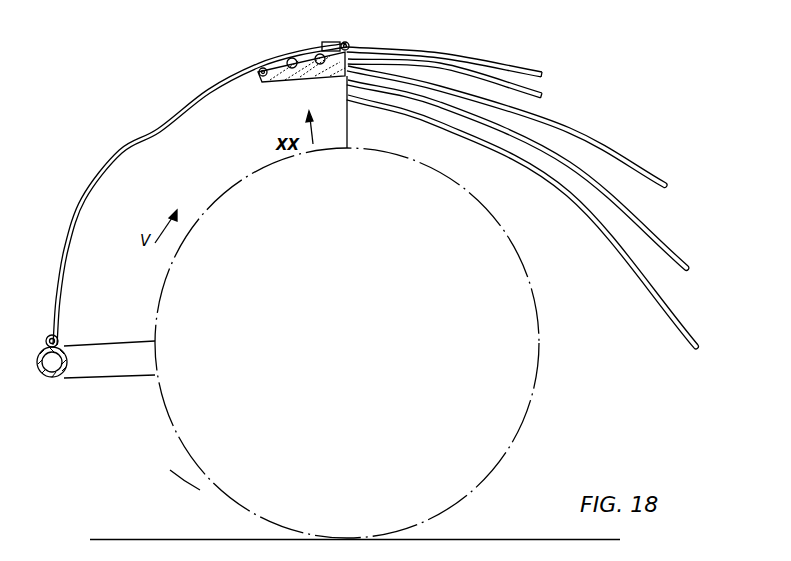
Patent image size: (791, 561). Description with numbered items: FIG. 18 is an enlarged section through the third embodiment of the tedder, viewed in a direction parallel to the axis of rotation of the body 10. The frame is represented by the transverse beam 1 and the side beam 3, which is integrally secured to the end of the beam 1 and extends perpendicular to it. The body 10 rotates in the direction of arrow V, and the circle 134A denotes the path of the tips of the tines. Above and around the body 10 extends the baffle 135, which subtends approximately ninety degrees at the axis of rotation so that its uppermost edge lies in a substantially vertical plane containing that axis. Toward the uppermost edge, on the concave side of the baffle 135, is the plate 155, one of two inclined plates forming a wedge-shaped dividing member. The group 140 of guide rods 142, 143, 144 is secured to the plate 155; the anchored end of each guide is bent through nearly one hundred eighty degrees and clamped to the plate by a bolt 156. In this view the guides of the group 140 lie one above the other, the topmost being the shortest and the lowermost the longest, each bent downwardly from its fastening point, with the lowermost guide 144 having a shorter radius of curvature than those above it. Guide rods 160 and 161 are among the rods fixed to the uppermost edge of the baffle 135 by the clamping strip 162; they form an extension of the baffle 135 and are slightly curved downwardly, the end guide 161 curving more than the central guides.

The beam 1 is at (52, 377).
The beam 3 is at (124, 370).
The body 10 is at (487, 482).
The circle 134A is at (194, 484).
The baffle 135 is at (123, 155).
The group of guide rods 140 is at (648, 268).
The guide rod 142 is at (675, 303).
The guide rod 143 is at (660, 230).
The guide rod 144 is at (615, 152).
The plate 155 is at (247, 80).
The bolt 156 is at (265, 78).
The guide rod 160 is at (521, 62).
The guide rod 161 is at (544, 91).
The clamping strip 162 is at (312, 40).